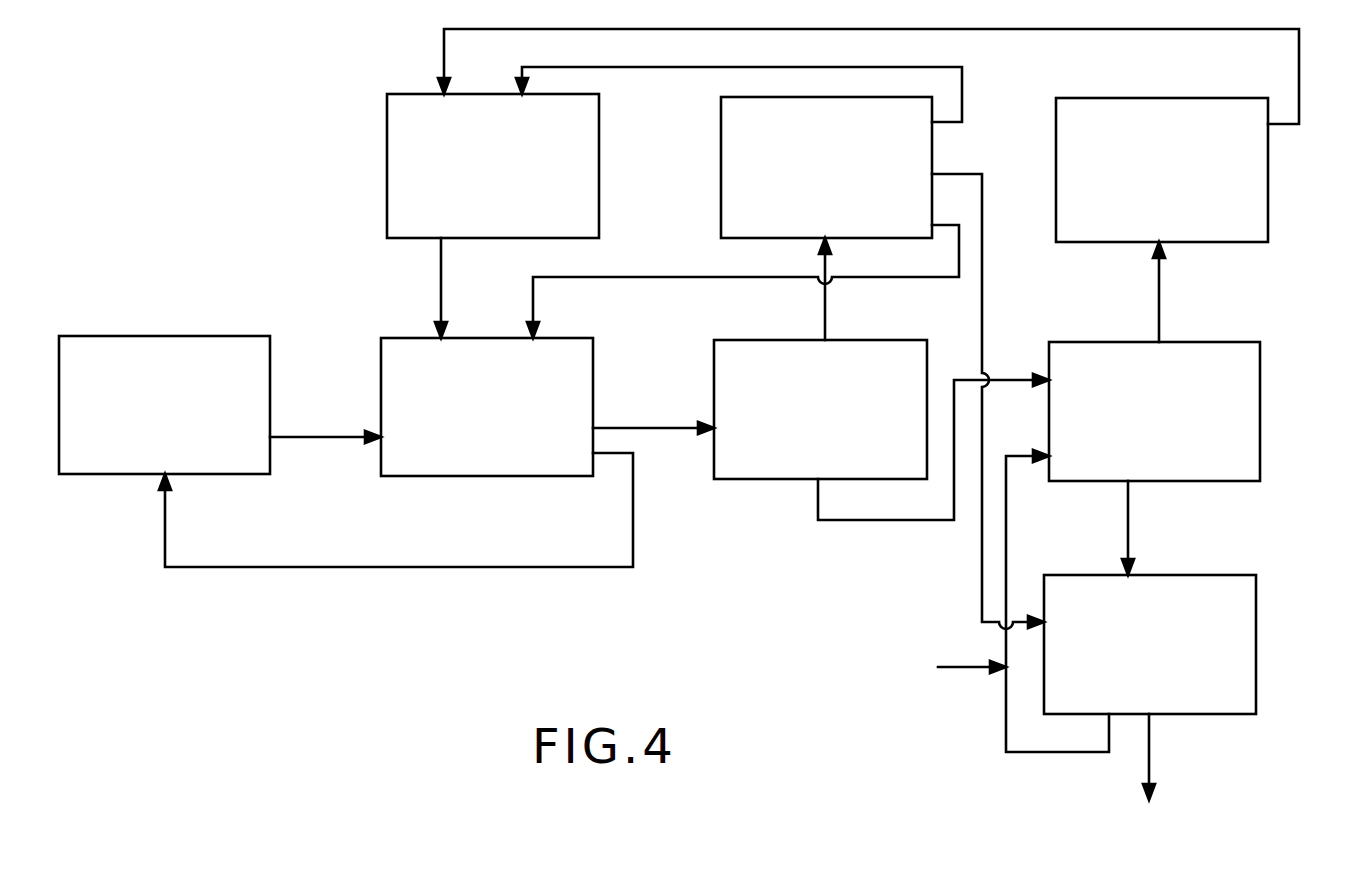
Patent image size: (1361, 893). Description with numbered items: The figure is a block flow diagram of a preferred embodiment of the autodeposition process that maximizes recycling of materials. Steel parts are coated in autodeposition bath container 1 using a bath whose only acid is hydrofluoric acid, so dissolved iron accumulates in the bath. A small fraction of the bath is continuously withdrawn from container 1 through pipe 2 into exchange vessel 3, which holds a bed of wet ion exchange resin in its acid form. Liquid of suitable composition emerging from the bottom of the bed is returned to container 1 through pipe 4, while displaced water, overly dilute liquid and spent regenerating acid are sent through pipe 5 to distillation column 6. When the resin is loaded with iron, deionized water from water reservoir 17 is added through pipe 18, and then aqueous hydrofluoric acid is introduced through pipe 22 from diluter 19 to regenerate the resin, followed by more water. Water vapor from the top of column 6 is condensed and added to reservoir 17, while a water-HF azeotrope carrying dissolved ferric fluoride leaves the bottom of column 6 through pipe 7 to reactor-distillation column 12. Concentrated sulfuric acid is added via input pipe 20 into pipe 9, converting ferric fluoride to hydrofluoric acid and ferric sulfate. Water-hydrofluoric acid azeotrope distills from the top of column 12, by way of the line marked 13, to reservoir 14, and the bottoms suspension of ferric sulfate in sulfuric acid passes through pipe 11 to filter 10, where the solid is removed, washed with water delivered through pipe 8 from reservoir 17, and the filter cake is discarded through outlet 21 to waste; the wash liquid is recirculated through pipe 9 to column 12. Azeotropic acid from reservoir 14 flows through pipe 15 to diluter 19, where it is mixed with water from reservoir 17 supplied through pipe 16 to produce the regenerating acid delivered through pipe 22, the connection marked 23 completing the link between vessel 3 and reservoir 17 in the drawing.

The autodeposition bath container 1 is at (168, 300).
The pipe 2 is at (330, 436).
The exchange vessel 3 is at (381, 371).
The pipe 4 is at (418, 566).
The pipe 5 is at (654, 428).
The distillation column 6 is at (767, 479).
The pipe 7 is at (906, 520).
The pipe 8 is at (982, 570).
The pipe 9 is at (1006, 693).
The filter 10 is at (1272, 648).
The pipe 11 is at (1128, 540).
The reactor-distillation column 12 is at (1260, 431).
The signal line 13 is at (1159, 312).
The reservoir 14 is at (1268, 180).
The pipe 15 is at (1299, 102).
The pipe 16 is at (962, 96).
The water reservoir 17 is at (932, 157).
The pipe 18 is at (680, 276).
The diluter 19 is at (599, 190).
The input pipe 20 is at (952, 666).
The outlet 21 is at (1149, 756).
The pipe 22 is at (440, 284).
The signal line 23 is at (825, 310).